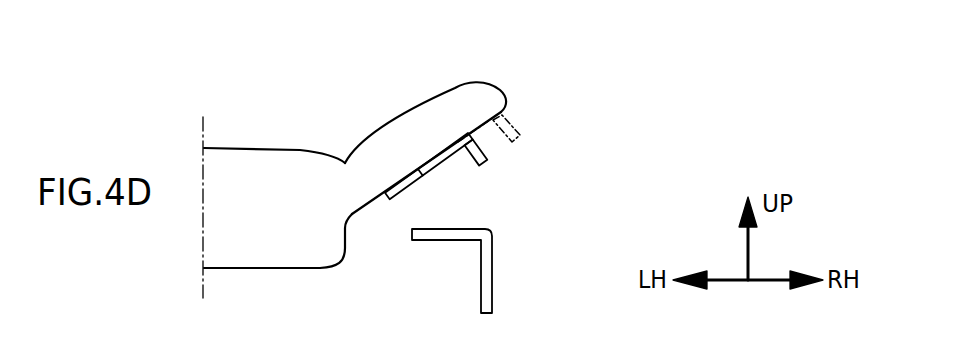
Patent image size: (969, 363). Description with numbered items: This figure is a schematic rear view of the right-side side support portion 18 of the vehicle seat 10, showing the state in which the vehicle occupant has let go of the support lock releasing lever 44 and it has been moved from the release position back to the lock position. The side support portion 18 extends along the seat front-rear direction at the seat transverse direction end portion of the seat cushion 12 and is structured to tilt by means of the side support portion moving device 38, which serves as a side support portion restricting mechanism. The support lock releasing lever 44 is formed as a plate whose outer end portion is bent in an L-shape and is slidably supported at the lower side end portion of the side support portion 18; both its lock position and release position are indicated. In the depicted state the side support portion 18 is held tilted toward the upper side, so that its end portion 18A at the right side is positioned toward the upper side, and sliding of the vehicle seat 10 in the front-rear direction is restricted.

The vehicle seat 10 is at (282, 173).
The seat cushion 12 is at (238, 118).
The side support portion 18 is at (466, 120).
The end portion 18A is at (479, 86).
The side support portion moving device 38 is at (578, 99).
The support lock releasing lever 44 is at (516, 128).